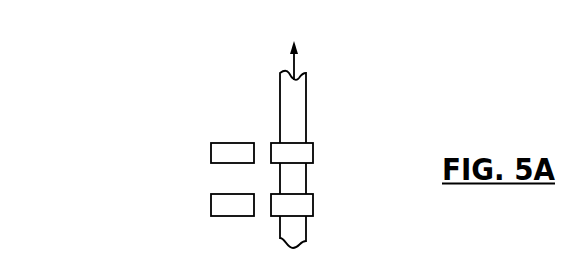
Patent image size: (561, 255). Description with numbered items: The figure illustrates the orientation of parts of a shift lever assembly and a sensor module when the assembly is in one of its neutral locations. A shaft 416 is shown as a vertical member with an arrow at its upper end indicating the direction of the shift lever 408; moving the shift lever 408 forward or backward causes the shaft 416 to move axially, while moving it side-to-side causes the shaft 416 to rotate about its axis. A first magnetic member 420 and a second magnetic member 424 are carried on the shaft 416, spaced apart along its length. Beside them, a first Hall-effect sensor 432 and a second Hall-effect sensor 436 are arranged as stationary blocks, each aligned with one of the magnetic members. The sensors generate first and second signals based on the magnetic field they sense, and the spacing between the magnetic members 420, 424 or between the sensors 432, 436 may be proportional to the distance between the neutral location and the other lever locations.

The shift lever 408 is at (293, 48).
The shaft 416 is at (280, 86).
The first magnetic member 420 is at (313, 152).
The second magnetic member 424 is at (313, 205).
The first Hall-effect sensor 432 is at (211, 152).
The second Hall-effect sensor 436 is at (211, 205).